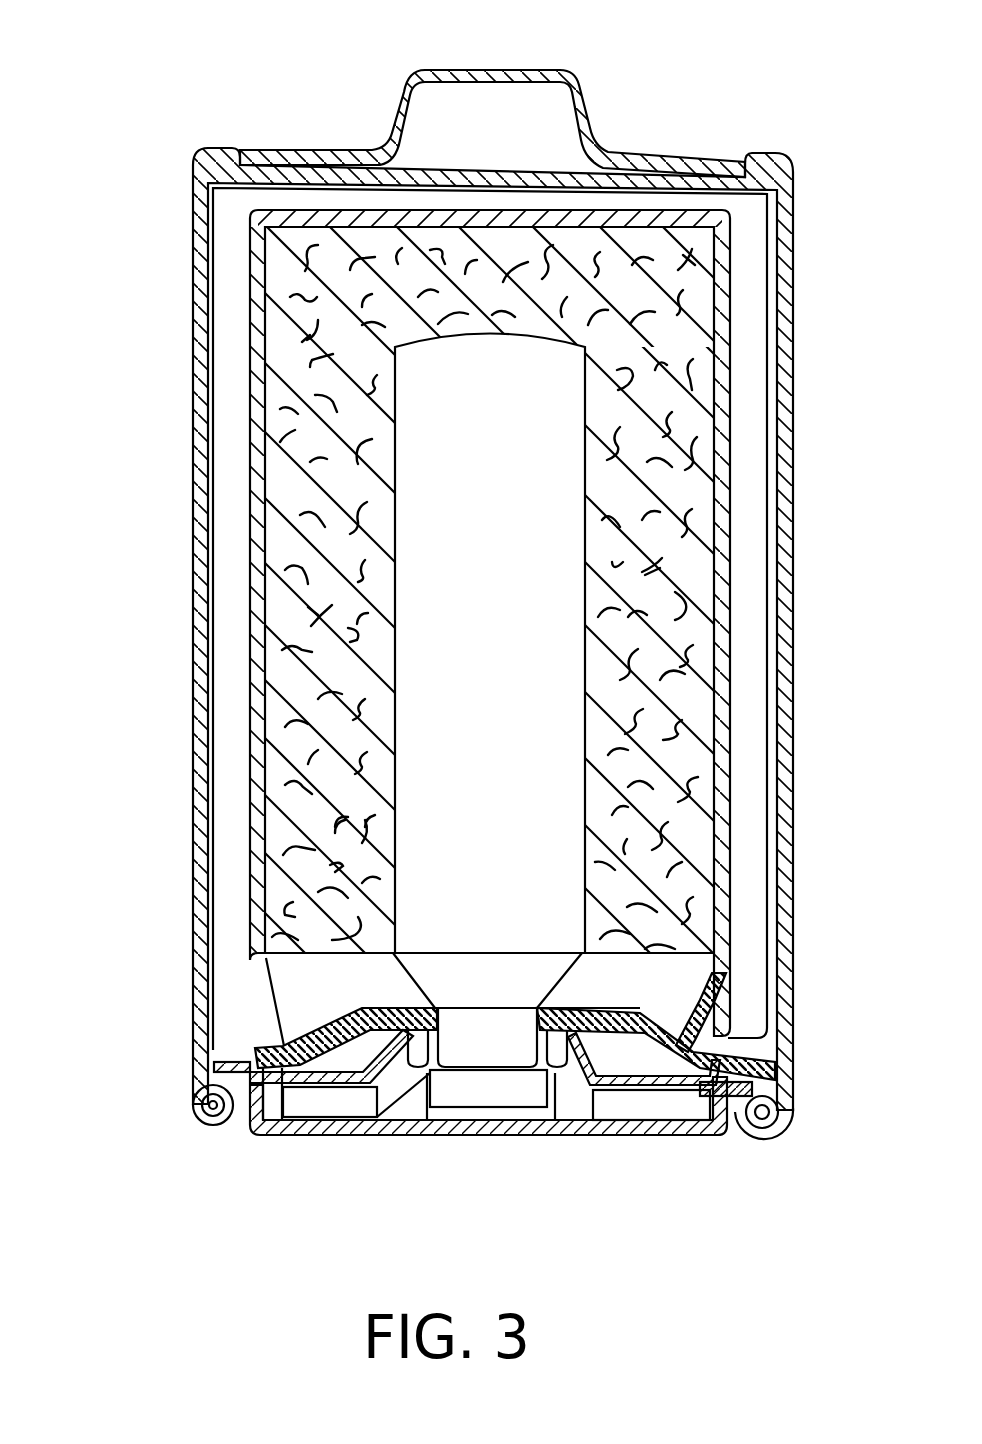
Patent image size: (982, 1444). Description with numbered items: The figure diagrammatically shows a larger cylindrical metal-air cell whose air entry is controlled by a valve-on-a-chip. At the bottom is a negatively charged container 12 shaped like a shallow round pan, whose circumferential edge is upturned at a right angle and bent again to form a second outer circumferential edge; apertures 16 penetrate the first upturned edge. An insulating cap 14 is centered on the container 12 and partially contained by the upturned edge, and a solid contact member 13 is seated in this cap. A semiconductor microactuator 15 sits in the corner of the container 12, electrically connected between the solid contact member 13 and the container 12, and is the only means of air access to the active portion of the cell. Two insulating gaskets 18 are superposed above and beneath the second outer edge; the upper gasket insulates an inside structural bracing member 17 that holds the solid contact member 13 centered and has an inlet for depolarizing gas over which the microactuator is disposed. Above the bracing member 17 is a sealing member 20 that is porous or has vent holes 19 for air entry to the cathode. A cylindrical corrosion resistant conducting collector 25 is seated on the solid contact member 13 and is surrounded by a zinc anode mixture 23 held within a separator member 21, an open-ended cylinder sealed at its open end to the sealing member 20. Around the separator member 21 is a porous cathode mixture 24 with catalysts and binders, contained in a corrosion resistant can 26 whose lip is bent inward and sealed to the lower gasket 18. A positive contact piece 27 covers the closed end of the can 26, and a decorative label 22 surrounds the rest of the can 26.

The container 12 is at (553, 1133).
The solid contact member 13 is at (488, 1087).
The insulating cap 14 is at (445, 1113).
The semiconductor microactuator 15 is at (323, 1100).
The apertures 16 is at (247, 1117).
The inside structural bracing member 17 is at (280, 1122).
The insulating gaskets 18 is at (213, 1100).
The vent holes 19 is at (260, 1043).
The sealing member 20 is at (270, 1015).
The separator member 21 is at (247, 444).
The decorative label 22 is at (193, 723).
The zinc anode mixture 23 is at (303, 600).
The porous cathode mixture 24 is at (232, 525).
The corrosion resistant conducting collector 25 is at (472, 405).
The corrosion resistant can 26 is at (193, 200).
The positive contact piece 27 is at (397, 117).